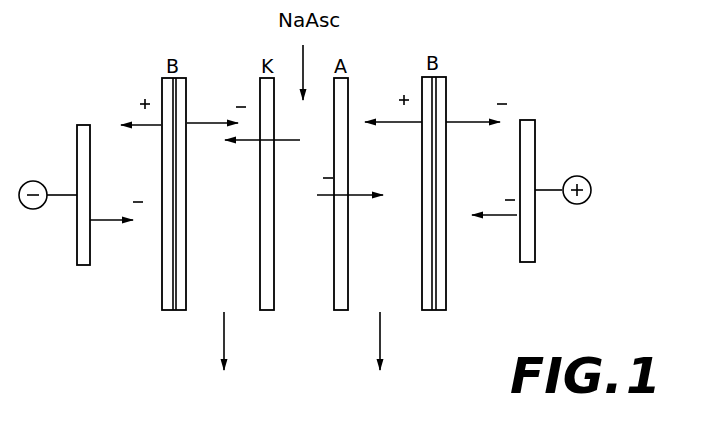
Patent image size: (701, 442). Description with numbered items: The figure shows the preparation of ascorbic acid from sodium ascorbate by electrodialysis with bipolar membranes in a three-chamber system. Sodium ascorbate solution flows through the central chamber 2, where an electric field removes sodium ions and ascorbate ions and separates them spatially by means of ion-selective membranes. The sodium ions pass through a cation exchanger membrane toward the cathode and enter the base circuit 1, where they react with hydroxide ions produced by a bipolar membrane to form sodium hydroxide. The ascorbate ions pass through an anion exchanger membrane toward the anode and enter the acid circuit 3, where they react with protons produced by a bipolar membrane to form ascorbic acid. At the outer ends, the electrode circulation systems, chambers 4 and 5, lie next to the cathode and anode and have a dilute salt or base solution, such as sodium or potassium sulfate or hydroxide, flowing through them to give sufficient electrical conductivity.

The base circuit 1 is at (210, 224).
The chamber 2 is at (321, 194).
The acid circuit 3 is at (397, 223).
The electrode circulation system chamber 4 is at (81, 201).
The electrode circulation system chamber 5 is at (518, 183).